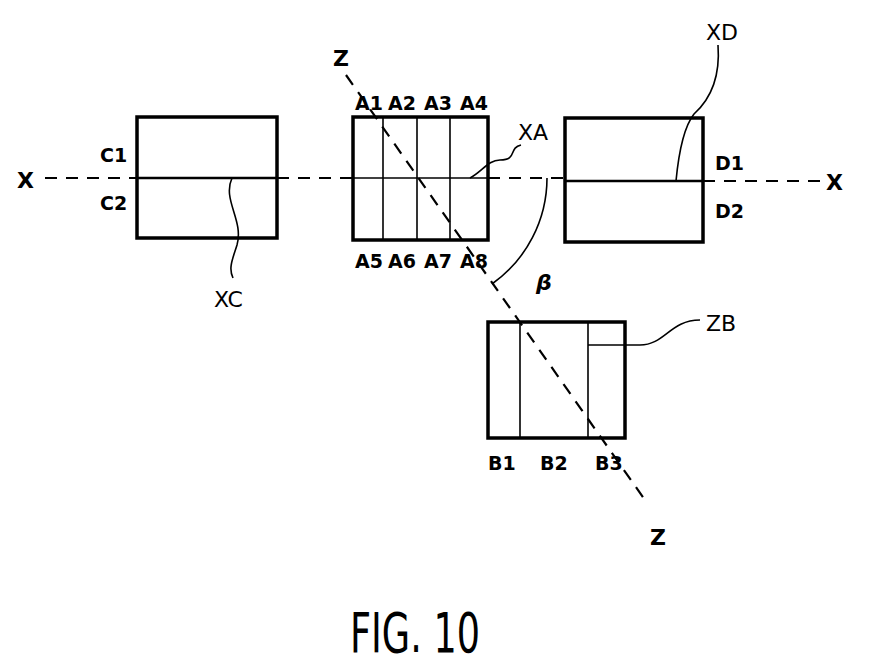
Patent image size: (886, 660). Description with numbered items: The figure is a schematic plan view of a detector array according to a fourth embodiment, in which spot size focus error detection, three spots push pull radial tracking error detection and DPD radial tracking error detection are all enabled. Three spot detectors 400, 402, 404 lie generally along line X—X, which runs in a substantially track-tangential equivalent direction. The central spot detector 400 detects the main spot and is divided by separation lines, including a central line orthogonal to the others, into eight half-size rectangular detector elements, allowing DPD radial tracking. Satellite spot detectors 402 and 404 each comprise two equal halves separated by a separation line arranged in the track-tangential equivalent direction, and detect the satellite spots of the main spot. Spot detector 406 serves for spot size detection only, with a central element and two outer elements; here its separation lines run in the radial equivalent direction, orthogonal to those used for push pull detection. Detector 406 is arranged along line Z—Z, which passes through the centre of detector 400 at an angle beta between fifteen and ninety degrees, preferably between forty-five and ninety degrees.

The spot detector 400 is at (488, 128).
The spot detector 402 is at (226, 117).
The spot detector 404 is at (648, 118).
The spot detector 406 is at (625, 423).